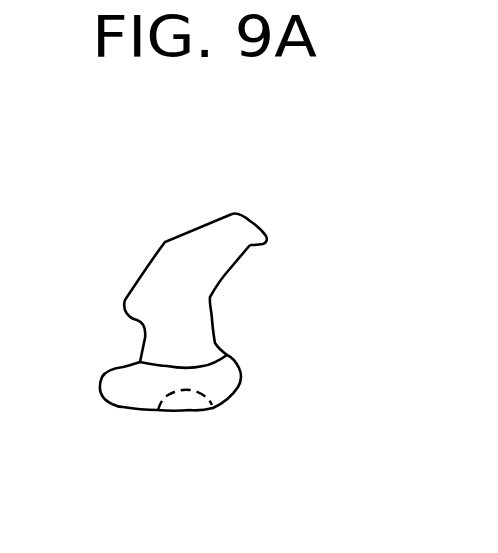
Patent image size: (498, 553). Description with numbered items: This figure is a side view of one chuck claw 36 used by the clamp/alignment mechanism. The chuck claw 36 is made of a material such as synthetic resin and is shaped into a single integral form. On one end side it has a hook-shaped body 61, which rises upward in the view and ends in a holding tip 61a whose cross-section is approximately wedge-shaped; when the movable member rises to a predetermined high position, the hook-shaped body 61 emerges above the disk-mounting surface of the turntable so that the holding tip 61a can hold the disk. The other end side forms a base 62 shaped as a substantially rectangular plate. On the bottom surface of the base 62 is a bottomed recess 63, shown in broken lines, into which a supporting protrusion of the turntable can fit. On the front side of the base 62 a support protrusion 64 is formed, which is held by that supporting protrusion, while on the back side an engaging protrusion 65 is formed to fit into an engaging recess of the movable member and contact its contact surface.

The chuck claw 36 is at (173, 218).
The hook-shaped body 61 is at (210, 272).
The holding tip 61a is at (267, 237).
The base 62 is at (133, 395).
The bottomed recess 63 is at (193, 402).
The support protrusion 64 is at (242, 375).
The engaging protrusion 65 is at (100, 380).